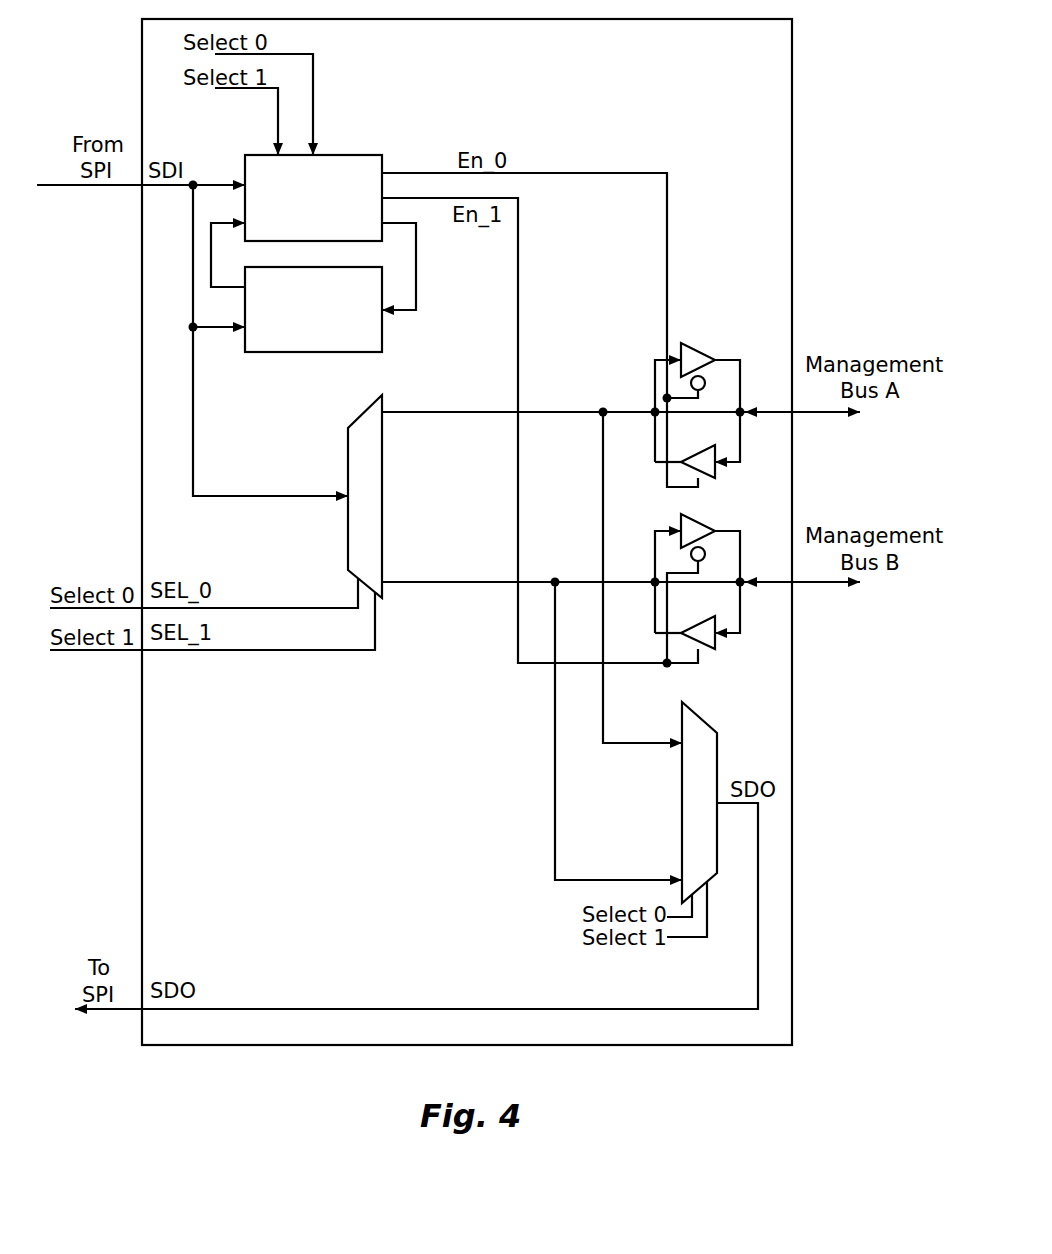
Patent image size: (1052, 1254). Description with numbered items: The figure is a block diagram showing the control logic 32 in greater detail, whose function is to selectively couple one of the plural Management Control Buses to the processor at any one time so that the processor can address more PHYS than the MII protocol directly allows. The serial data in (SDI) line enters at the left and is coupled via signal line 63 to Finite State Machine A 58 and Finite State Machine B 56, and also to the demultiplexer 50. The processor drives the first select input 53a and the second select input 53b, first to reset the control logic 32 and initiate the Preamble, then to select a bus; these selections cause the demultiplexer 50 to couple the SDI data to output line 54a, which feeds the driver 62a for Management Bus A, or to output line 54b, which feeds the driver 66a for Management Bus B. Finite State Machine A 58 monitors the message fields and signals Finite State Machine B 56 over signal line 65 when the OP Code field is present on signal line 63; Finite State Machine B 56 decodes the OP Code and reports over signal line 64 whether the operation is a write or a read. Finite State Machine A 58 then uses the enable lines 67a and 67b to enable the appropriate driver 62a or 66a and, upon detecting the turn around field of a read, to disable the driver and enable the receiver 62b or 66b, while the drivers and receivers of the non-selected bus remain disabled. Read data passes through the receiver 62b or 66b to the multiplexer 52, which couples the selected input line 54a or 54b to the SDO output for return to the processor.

The control logic 32 is at (744, 165).
The Finite State Machine A 58 is at (300, 235).
The Finite State Machine B 56 is at (300, 346).
The signal line 64 is at (211, 258).
The signal line 65 is at (416, 290).
The signal line 63 is at (193, 365).
The demultiplexer 50 is at (382, 443).
The output line 54a is at (480, 414).
The output line 54b is at (492, 580).
The SEL_0 input 53a is at (298, 608).
The SEL_1 input 53b is at (298, 650).
The enable line 67a is at (667, 232).
The enable line 67b is at (518, 232).
The driver 62a is at (697, 350).
The receiver 62b is at (715, 470).
The driver 66a is at (682, 518).
The receiver 66b is at (714, 643).
The multiplexer 52 is at (682, 800).